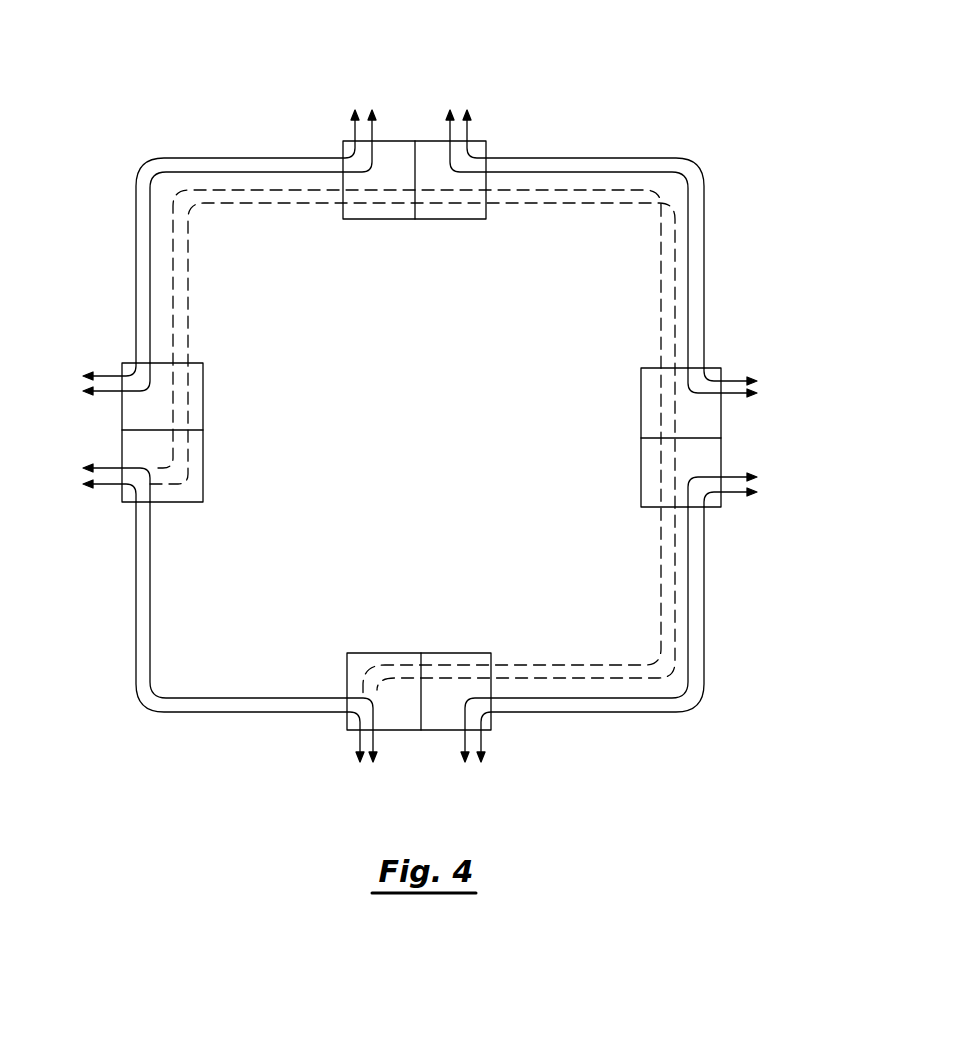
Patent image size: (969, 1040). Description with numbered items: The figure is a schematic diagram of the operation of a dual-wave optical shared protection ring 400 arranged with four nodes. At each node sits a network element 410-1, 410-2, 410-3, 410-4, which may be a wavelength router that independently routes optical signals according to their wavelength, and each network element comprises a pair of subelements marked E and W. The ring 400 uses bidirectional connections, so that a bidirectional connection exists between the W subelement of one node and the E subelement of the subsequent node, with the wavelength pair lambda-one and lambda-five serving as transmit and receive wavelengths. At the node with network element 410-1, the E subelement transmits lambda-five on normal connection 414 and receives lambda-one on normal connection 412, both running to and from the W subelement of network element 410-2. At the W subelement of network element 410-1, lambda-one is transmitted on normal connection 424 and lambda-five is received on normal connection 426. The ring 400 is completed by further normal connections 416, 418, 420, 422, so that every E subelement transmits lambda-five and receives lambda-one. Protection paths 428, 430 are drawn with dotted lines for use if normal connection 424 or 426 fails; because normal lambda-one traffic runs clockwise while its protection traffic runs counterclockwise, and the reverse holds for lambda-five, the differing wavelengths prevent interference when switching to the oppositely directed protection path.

The ring 400 is at (619, 92).
The network element 410-1 is at (395, 653).
The network element 410-2 is at (641, 452).
The network element 410-3 is at (395, 220).
The network element 410-4 is at (202, 410).
The normal connection 412 is at (610, 712).
The normal connection 414 is at (687, 708).
The normal connection 416 is at (708, 181).
The normal connection 418 is at (633, 172).
The normal connection 420 is at (141, 166).
The normal connection 422 is at (187, 172).
The normal connection 424 is at (134, 672).
The normal connection 426 is at (204, 715).
The protection path 428 is at (553, 664).
The protection path 430 is at (614, 678).